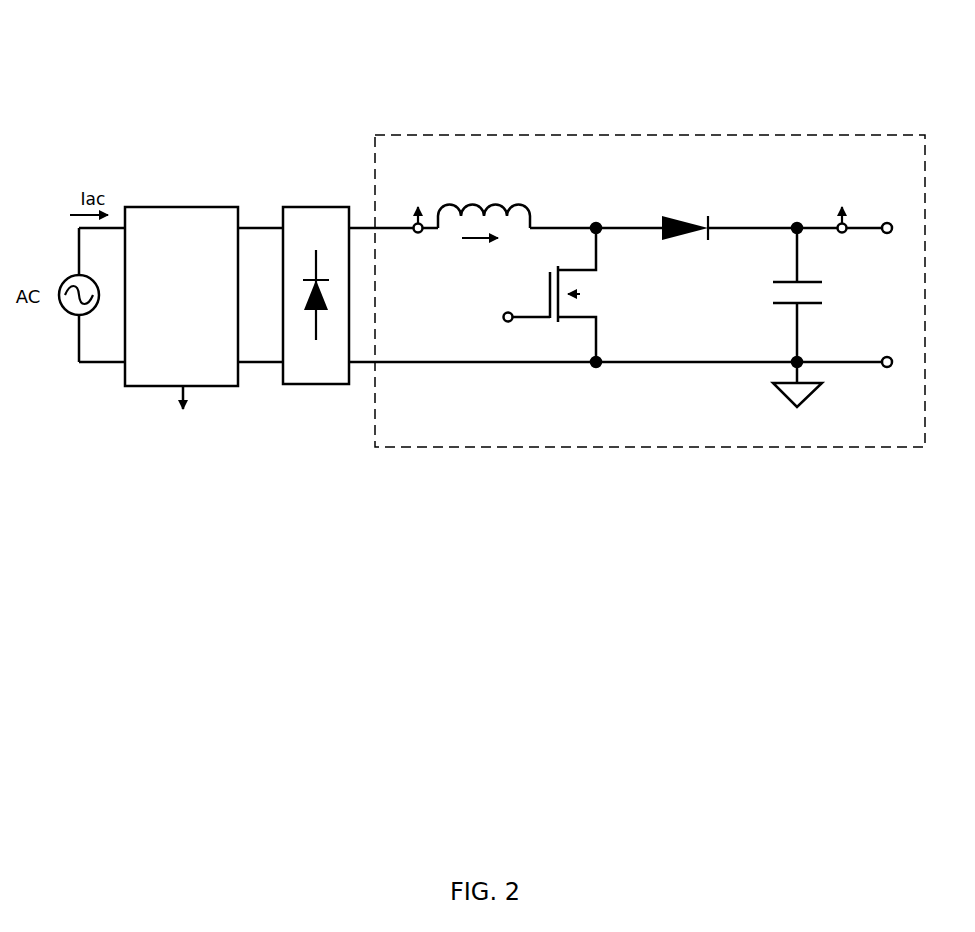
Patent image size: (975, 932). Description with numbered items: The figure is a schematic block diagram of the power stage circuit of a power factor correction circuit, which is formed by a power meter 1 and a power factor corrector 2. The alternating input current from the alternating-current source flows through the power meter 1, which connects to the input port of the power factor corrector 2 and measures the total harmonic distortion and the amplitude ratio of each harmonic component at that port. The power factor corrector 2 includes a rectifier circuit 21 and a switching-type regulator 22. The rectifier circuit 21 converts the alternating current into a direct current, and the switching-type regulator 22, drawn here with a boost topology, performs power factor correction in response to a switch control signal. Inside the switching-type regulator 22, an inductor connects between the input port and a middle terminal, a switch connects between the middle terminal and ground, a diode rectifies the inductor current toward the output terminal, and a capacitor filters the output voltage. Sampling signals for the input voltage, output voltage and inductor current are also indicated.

The power meter 1 is at (168, 207).
The power factor corrector 2 is at (658, 92).
The rectifier circuit 21 is at (312, 207).
The switching-type regulator 22 is at (562, 135).